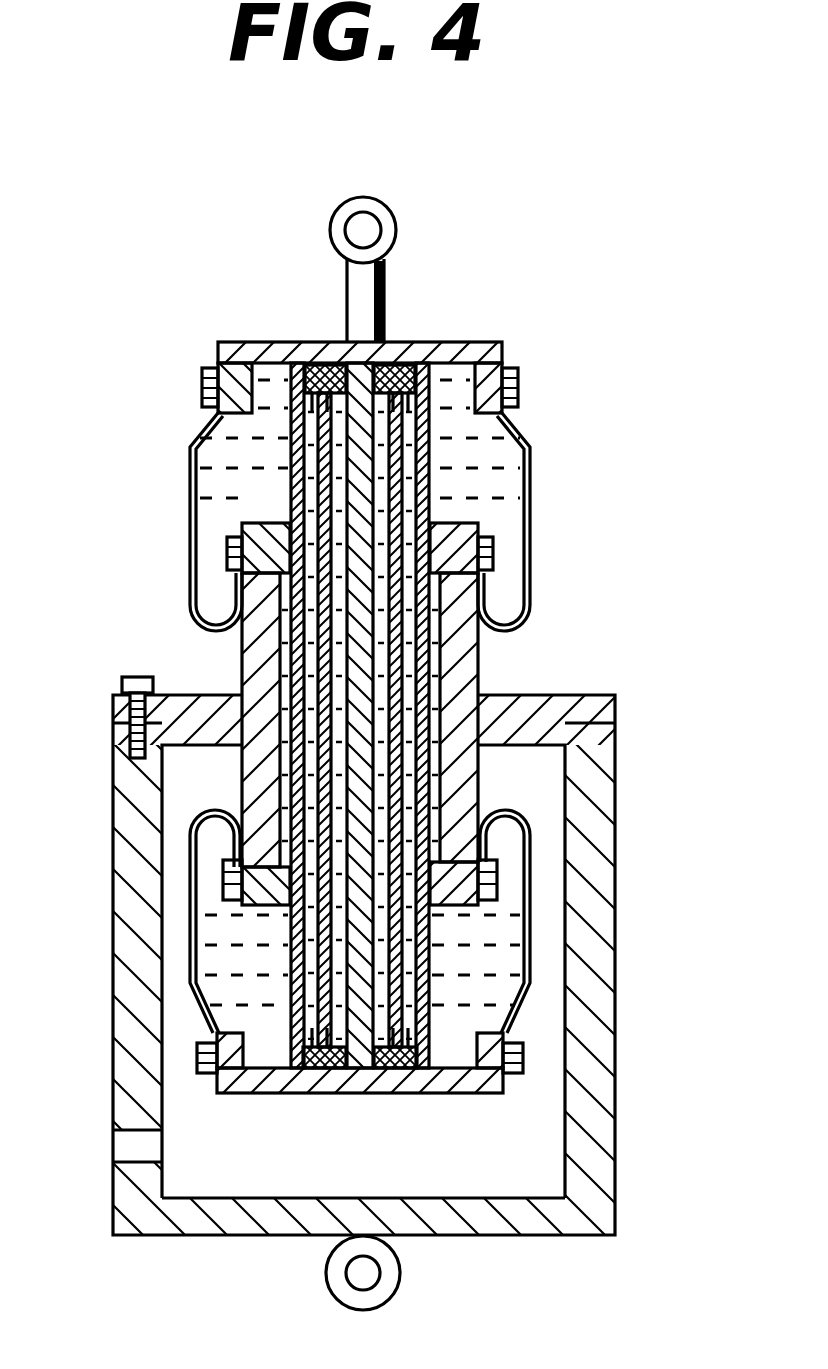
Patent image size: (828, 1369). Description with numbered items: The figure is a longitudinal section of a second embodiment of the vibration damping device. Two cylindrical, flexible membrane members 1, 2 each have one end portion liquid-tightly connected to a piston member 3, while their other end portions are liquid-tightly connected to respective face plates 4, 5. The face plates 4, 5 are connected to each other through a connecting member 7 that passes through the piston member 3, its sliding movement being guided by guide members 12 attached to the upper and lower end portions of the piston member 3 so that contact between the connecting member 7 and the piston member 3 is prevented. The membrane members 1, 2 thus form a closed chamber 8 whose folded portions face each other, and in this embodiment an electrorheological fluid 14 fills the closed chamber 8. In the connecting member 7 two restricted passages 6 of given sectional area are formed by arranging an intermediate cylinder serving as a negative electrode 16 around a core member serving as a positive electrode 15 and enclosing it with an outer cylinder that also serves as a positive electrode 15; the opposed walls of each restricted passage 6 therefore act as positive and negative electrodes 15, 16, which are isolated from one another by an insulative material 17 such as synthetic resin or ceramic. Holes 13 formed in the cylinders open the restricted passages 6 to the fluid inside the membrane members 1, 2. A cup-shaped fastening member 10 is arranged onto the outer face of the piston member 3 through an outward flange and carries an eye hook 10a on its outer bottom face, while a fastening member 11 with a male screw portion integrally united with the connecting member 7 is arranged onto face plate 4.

The cylindrical flexible membrane member 1 is at (364, 505).
The cylindrical flexible membrane member 2 is at (541, 870).
The piston member 3 is at (490, 655).
The face plate 4 is at (280, 342).
The face plate 5 is at (300, 1093).
The restricted passage 6 is at (315, 670).
The connecting member 7 is at (437, 460).
The closed chamber 8 is at (262, 494).
The cup-shaped fastening member 10 is at (630, 1082).
The eye hook 10a is at (393, 1287).
The fastening member 11 is at (396, 222).
The guide member 12 is at (235, 527).
The hole 13 is at (452, 375).
The electrorheological fluid 14 is at (207, 503).
The positive electrode 15 is at (437, 932).
The negative electrode 16 is at (402, 962).
The insulative material 17 is at (333, 362).